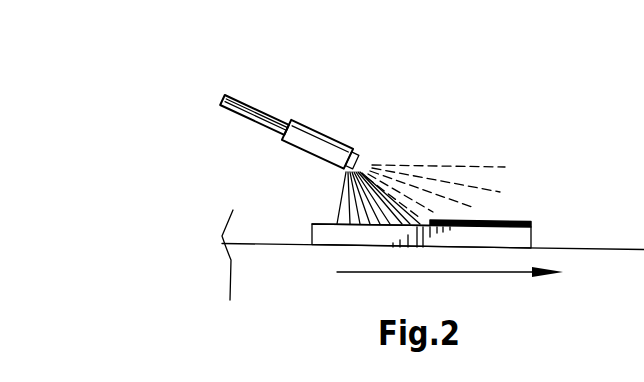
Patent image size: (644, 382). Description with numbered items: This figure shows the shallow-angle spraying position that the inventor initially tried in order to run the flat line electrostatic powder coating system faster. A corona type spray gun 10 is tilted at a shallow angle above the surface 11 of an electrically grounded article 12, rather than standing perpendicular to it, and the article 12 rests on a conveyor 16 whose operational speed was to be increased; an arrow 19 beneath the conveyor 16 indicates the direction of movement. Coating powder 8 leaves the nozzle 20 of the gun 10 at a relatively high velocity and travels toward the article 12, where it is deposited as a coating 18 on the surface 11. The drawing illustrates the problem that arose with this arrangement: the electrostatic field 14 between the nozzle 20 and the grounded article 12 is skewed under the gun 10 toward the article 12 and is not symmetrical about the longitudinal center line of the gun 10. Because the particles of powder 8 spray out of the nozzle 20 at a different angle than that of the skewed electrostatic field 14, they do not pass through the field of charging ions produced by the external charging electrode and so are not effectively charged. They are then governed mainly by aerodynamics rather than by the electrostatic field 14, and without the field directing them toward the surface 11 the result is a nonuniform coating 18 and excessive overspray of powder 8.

The coating powder 8 is at (451, 152).
The spray gun 10 is at (307, 122).
The surface 11 is at (337, 223).
The article 12 is at (318, 228).
The electrostatic field 14 is at (337, 199).
The conveyor 16 is at (605, 250).
The coating 18 is at (500, 221).
The direction of relative movement 19 is at (375, 273).
The nozzle 20 is at (358, 168).